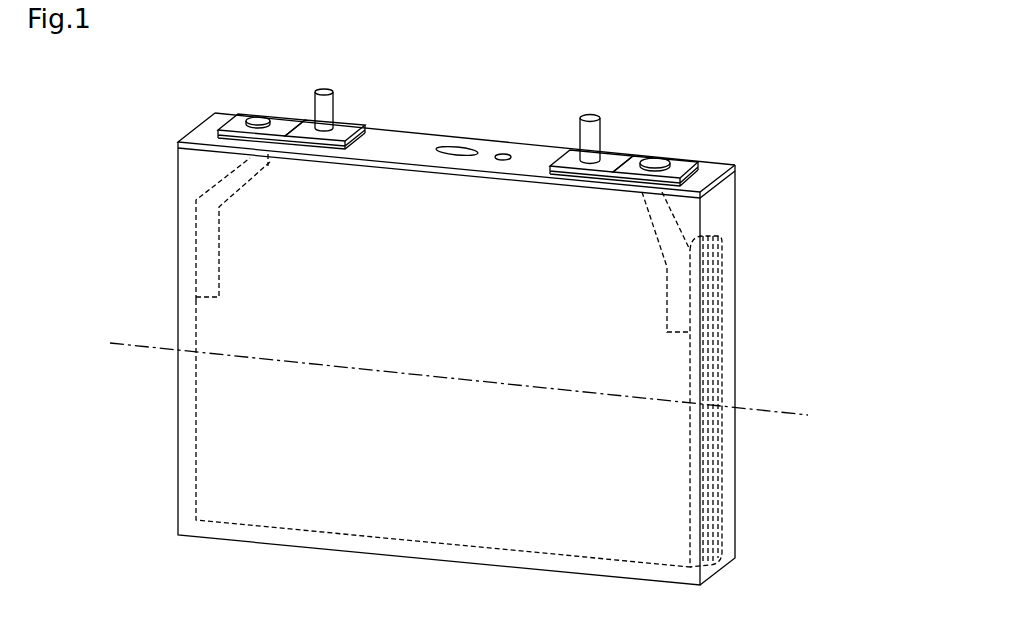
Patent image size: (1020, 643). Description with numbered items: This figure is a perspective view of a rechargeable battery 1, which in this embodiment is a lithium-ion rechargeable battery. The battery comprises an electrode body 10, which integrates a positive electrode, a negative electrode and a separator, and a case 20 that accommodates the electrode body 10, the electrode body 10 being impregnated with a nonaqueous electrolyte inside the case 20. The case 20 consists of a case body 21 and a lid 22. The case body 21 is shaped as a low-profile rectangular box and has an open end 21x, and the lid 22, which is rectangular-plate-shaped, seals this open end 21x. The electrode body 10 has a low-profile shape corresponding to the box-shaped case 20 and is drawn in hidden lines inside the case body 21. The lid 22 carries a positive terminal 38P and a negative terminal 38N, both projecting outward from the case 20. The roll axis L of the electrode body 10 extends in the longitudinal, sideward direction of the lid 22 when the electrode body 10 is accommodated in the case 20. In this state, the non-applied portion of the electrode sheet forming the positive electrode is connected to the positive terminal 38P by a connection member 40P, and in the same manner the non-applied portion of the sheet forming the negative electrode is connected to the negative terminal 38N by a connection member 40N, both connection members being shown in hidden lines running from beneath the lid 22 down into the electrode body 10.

The rechargeable battery 1 is at (797, 75).
The case 20 is at (736, 558).
The case body 21 is at (179, 235).
The open end 21x is at (200, 143).
The lid 22 is at (403, 142).
The positive terminal 38P is at (322, 89).
The negative terminal 38N is at (592, 116).
The connection member 40P is at (218, 182).
The connection member 40N is at (680, 210).
The electrode body 10 is at (720, 478).
The roll axis L is at (783, 406).